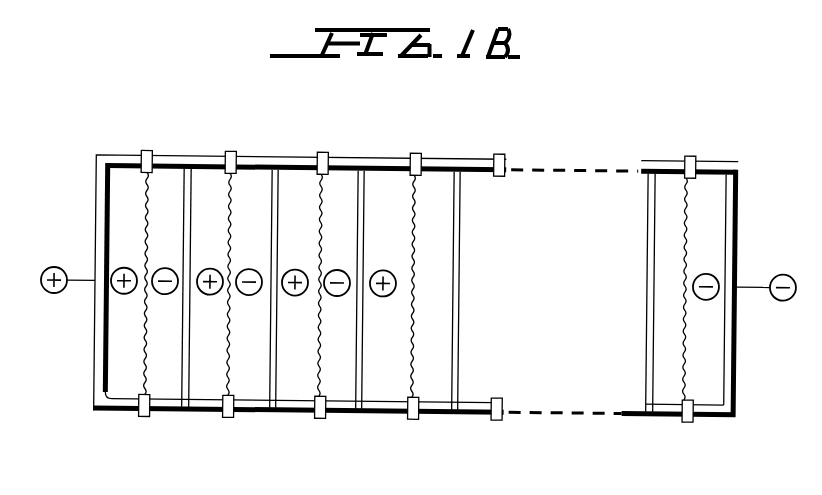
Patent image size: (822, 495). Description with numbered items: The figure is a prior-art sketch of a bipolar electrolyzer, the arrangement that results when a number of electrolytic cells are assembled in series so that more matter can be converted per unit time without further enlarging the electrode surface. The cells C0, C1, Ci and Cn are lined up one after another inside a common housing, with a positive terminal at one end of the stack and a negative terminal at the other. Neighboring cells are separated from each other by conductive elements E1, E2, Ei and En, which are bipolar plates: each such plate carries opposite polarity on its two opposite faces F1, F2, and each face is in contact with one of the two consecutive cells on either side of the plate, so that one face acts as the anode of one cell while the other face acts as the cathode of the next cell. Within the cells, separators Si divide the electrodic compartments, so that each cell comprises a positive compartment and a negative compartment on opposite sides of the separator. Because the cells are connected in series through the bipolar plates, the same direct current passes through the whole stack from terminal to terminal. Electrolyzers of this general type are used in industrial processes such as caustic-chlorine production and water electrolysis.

The cell C0 is at (145, 265).
The cell C1 is at (230, 266).
The cell Ci is at (401, 268).
The cell Cn is at (696, 268).
The conductive element E1 is at (202, 267).
The conductive element E2 is at (272, 405).
The conductive element Ei is at (358, 406).
The conductive element En is at (652, 407).
The face F1 is at (176, 192).
The face F2 is at (200, 189).
The separator Si is at (404, 206).